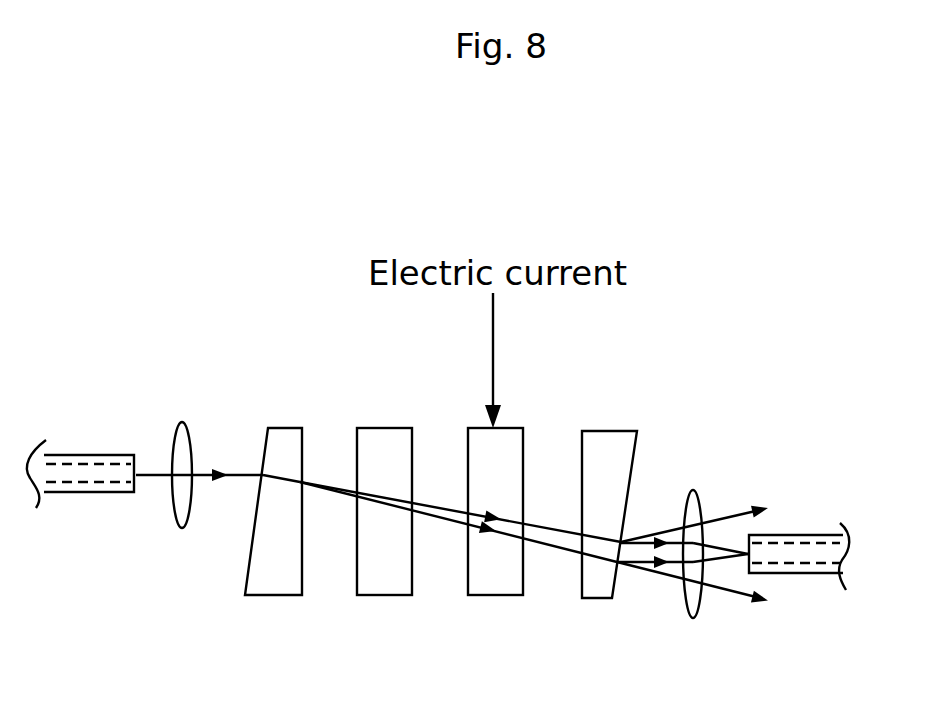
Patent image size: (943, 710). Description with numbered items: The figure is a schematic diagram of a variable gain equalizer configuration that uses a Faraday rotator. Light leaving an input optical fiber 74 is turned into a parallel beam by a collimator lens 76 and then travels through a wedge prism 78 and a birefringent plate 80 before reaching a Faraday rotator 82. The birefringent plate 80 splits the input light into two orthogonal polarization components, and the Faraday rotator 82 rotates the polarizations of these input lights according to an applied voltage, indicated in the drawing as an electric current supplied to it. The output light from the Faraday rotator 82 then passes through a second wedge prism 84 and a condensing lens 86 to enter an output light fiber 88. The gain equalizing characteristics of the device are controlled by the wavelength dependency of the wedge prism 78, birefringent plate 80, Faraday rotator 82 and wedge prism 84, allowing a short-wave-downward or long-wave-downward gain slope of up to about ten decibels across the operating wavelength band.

The input optical fiber 74 is at (83, 455).
The collimator lens 76 is at (182, 425).
The wedge prism 78 is at (270, 585).
The birefringent plate 80 is at (375, 585).
The Faraday rotator 82 is at (488, 585).
The wedge prism 84 is at (593, 588).
The condensing lens 86 is at (695, 490).
The output light fiber 88 is at (803, 535).